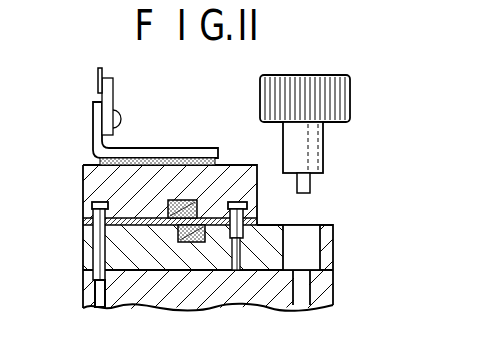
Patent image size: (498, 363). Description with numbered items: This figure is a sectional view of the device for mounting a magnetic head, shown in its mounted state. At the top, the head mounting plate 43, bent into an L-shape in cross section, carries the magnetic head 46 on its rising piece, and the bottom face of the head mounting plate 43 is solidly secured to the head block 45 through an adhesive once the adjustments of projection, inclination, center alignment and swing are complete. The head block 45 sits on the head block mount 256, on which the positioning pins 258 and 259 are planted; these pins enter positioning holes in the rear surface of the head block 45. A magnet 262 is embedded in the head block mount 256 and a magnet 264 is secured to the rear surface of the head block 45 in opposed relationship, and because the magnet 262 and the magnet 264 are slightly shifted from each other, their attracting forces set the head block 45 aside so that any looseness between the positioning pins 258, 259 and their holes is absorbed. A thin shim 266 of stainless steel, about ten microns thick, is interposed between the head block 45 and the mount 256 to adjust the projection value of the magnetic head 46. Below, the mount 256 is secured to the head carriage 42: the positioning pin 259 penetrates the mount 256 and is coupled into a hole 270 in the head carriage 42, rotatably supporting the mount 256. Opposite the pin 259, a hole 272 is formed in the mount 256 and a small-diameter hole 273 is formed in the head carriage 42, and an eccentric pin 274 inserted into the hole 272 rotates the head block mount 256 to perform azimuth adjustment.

The head carriage 42 is at (325, 285).
The head mounting plate 43 is at (148, 147).
The head block 45 is at (83, 170).
The magnetic head 46 is at (98, 70).
The head block mount 256 is at (83, 239).
The positioning pin 258 is at (128, 270).
The positioning pin 259 is at (97, 256).
The magnet 262 is at (188, 242).
The magnet 264 is at (230, 163).
The shim 266 is at (83, 220).
The hole 270 is at (83, 297).
The hole 272 is at (310, 247).
The small-diameter hole 273 is at (303, 303).
The eccentric pin 274 is at (352, 110).